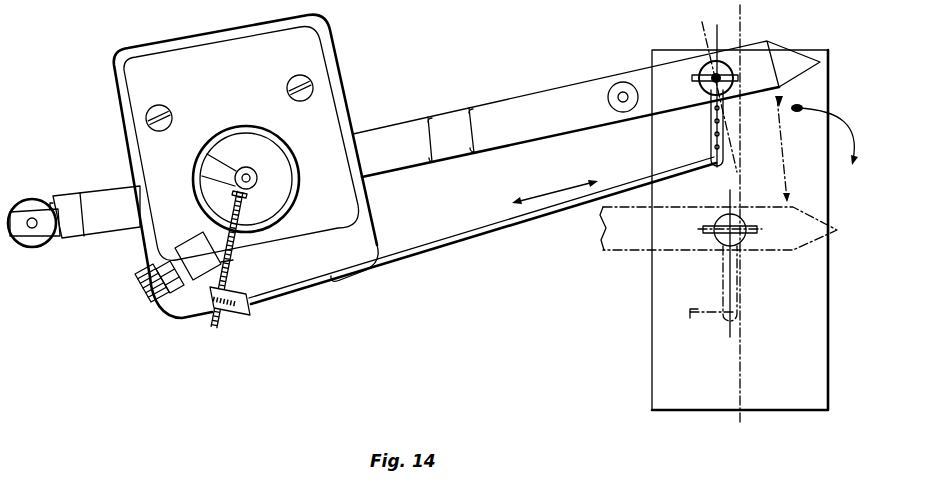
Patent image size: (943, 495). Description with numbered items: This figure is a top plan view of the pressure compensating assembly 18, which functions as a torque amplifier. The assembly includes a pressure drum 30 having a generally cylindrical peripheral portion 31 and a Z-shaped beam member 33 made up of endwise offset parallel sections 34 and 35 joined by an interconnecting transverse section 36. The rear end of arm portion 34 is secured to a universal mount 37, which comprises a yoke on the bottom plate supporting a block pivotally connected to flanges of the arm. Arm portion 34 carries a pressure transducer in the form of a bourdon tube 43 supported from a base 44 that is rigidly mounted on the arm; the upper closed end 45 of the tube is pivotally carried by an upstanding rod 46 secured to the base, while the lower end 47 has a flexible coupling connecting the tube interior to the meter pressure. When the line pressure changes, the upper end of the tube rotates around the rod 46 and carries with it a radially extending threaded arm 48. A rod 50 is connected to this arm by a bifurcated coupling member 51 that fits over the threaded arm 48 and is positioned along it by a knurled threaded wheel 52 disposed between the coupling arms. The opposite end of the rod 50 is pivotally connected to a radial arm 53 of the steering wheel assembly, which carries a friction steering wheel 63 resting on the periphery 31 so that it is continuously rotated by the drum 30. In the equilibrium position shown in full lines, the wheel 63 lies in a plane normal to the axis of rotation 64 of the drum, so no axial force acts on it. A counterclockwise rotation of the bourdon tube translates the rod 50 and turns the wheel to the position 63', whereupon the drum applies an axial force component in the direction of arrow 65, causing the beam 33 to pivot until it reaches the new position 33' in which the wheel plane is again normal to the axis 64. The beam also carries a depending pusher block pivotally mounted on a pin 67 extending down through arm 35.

The pressure compensating assembly 18 is at (246, 212).
The pressure drum 30 is at (648, 369).
The cylindrical peripheral portion 31 is at (740, 230).
The Z-shaped beam member 33 is at (586, 105).
The new position of arm 33' is at (701, 215).
The arm portion 34 is at (397, 161).
The arm portion 35 is at (566, 123).
The interconnecting transverse section 36 is at (458, 148).
The universal mount 37 is at (42, 266).
The bourdon tube 43 is at (278, 126).
The base 44 is at (241, 144).
The upper closed end 45 is at (233, 161).
The upstanding rod 46 is at (257, 180).
The lower end 47 is at (193, 254).
The threaded arm 48 is at (232, 263).
The rod 50 is at (478, 238).
The bifurcated coupling member 51 is at (248, 313).
The knurled threaded wheel 52 is at (210, 302).
The radial arm 53 is at (711, 166).
The steering wheel 63 is at (734, 96).
The rotated position of steering wheel 63' is at (745, 94).
The axis of rotation 64 is at (740, 340).
The arrow 65 is at (789, 166).
The pin 67 is at (622, 92).